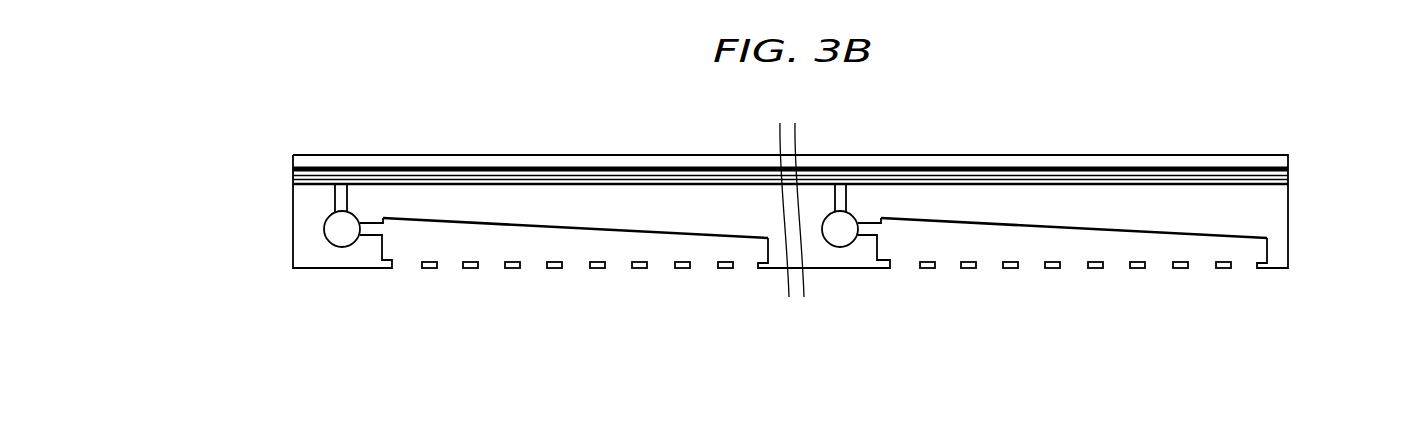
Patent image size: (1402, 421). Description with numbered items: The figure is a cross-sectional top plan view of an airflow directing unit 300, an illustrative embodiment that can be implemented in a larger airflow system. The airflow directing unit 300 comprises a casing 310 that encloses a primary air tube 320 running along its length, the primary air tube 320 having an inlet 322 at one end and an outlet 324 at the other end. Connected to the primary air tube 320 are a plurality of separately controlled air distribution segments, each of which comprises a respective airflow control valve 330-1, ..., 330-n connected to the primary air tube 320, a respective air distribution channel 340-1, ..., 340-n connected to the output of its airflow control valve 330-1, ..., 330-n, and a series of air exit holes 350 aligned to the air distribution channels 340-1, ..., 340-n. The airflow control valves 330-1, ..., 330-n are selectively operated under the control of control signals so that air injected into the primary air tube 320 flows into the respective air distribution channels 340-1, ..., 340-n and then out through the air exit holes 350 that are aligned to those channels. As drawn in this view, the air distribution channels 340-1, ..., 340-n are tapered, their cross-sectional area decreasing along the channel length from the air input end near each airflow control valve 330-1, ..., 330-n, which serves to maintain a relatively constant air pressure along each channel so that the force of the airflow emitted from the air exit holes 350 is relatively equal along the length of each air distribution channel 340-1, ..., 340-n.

The airflow directing unit 300 is at (808, 105).
The casing 310 is at (1188, 155).
The primary air tube 320 is at (663, 175).
The inlet 322 is at (293, 178).
The outlet 324 is at (1289, 180).
The airflow control valve 330-1 is at (343, 238).
The airflow control valve 330-n is at (841, 238).
The air distribution channel 340-1 is at (609, 229).
The air distribution channel 340-n is at (1107, 229).
The air exit holes 350 is at (490, 268).